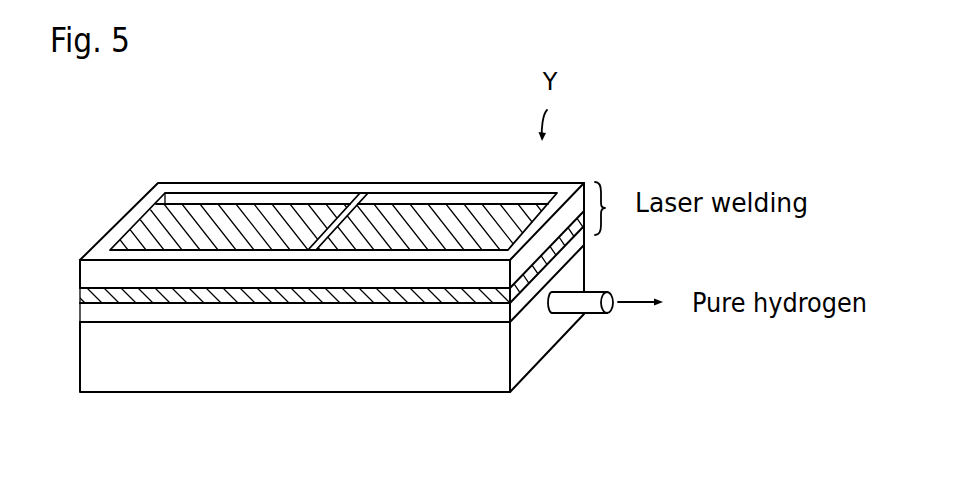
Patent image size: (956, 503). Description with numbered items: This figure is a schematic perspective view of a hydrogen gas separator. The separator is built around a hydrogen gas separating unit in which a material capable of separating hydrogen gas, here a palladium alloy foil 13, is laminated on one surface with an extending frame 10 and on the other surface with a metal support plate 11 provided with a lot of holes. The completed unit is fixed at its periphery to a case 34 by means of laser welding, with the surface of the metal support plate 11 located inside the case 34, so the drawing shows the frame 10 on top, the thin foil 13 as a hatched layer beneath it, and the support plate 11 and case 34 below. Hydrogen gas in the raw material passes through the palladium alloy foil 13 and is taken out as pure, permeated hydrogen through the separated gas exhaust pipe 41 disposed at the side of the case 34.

The frame 10 is at (195, 183).
The metal support plate 11 is at (88, 311).
The palladium alloy foil 13 is at (88, 293).
The case 34 is at (282, 378).
The separated gas exhaust pipe 41 is at (577, 310).